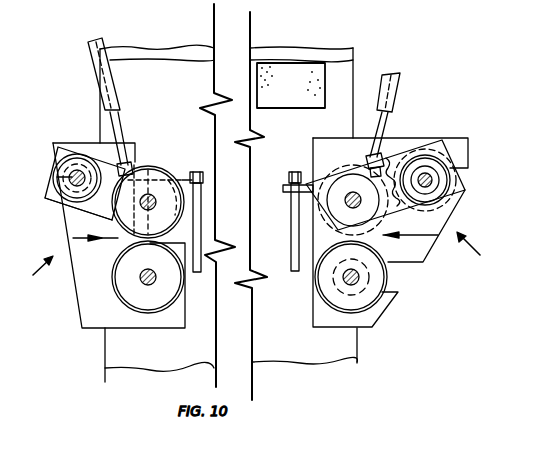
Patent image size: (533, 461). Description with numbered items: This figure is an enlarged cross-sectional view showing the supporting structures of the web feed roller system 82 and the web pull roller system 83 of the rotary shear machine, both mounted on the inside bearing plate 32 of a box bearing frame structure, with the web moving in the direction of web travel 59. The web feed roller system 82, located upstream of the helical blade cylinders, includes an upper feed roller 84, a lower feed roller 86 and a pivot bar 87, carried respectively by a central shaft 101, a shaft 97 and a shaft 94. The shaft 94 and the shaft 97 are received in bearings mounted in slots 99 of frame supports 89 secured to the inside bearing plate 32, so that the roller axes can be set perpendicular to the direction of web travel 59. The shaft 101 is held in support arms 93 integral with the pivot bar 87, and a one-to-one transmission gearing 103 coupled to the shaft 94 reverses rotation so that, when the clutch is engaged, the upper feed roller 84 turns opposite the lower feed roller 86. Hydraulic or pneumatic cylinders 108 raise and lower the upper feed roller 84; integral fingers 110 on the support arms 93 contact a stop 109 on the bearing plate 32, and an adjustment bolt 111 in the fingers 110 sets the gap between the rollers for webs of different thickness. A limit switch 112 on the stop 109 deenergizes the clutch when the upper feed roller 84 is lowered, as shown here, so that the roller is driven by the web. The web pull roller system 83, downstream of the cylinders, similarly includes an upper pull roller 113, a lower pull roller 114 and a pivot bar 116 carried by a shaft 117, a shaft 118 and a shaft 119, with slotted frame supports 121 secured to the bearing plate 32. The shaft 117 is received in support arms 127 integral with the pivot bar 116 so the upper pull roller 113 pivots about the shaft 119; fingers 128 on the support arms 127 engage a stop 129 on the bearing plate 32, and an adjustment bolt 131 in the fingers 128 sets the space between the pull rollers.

The inside bearing plate 32 is at (170, 93).
The direction of web travel 59 is at (110, 241).
The web feed roller system 82 is at (467, 253).
The web pull roller system 83 is at (35, 275).
The upper feed roller 84 is at (363, 160).
The lower feed roller 86 is at (380, 294).
The pivot bar 87 is at (460, 189).
The frame support 89 is at (372, 329).
The support arm 93 is at (372, 163).
The shaft of pivot bar 94 is at (428, 177).
The shaft of lower feed roller 97 is at (341, 281).
The slot 99 is at (468, 170).
The shaft of upper feed roller 101 is at (350, 201).
The 1:1 transmission gearing 103 is at (393, 154).
The hydraulic or pneumatic cylinder 108 is at (94, 63).
The stop 109 is at (290, 222).
The finger 110 is at (312, 175).
The adjustment bolt 111 is at (289, 165).
The limit switch 112 is at (290, 191).
The upper pull roller 113 is at (186, 168).
The lower pull roller 114 is at (115, 283).
The pivot bar 116 is at (72, 156).
The shaft of upper pull roller 117 is at (140, 205).
The shaft of lower pull roller 118 is at (147, 286).
The shaft of pivot bar 119 is at (52, 165).
The frame support 121 is at (82, 330).
The support arm 127 is at (55, 187).
The finger 128 is at (203, 185).
The stop 129 is at (199, 274).
The adjustment bolt 131 is at (203, 172).